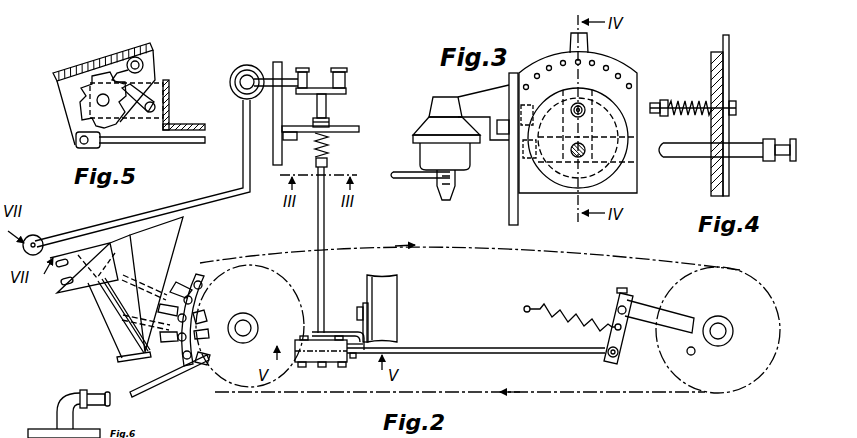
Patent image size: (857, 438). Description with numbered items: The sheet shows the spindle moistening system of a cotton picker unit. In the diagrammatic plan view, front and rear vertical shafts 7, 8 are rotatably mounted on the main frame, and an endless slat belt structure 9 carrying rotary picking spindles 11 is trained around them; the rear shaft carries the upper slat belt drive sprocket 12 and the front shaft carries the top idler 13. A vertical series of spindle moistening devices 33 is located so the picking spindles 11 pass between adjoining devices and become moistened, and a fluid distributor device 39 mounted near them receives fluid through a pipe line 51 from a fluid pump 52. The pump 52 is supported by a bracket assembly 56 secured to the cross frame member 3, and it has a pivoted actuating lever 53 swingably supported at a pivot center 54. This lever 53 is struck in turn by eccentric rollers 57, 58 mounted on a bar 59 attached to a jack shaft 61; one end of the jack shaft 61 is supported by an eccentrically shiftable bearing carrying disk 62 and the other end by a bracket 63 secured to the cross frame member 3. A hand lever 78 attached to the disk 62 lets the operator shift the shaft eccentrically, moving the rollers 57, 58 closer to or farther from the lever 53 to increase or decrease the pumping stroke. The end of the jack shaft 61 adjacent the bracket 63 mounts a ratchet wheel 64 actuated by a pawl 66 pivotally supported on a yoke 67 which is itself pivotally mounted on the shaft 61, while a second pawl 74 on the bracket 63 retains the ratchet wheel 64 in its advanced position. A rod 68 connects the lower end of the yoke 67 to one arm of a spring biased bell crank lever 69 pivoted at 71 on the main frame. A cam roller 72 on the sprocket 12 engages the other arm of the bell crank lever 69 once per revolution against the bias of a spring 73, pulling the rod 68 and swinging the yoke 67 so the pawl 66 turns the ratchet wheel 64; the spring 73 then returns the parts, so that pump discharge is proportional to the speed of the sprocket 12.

In FIG. 5, the cross frame member 3 is at (189, 124).
In FIG. 2, the cross frame member 3 is at (398, 307).
In FIG. 2, the front vertical shaft 7 is at (243, 318).
In FIG. 2, the rear vertical shaft 8 is at (719, 323).
In FIG. 2, the endless slat belt structure 9 is at (197, 283).
In FIG. 2, the rotary picking spindles 11 is at (163, 375).
In FIG. 2, the upper slat belt drive sprocket 12 is at (730, 393).
In FIG. 2, the top idler 13 is at (236, 389).
In FIG. 2, the spindle moistening devices 33 is at (98, 318).
In FIG. 2, the fluid distributor device 39 is at (40, 239).
In FIG. 3, the pipe line 51 is at (413, 179).
In FIG. 2, the pipe line 51 is at (196, 208).
In FIG. 6, the pipe line 51 is at (96, 391).
In FIG. 3, the fluid pump 52 is at (426, 126).
In FIG. 2, the fluid pump 52 is at (247, 64).
In FIG. 3, the pump actuating lever 53 is at (521, 146).
In FIG. 2, the pump actuating lever 53 is at (288, 78).
In FIG. 3, the pivot center 54 is at (528, 113).
In FIG. 3, the bracket assembly 56 is at (666, 69).
In FIG. 4, the bracket assembly 56 is at (712, 70).
In FIG. 2, the bracket assembly 56 is at (285, 141).
In FIG. 3, the eccentric roller 57 is at (530, 156).
In FIG. 4, the eccentric roller 57 is at (781, 139).
In FIG. 2, the eccentric roller 57 is at (306, 70).
In FIG. 4, the eccentric roller 58 is at (666, 112).
In FIG. 2, the eccentric roller 58 is at (346, 72).
In FIG. 4, the bar 59 is at (638, 166).
In FIG. 2, the bar 59 is at (348, 89).
In FIG. 5, the jack shaft 61 is at (99, 104).
In FIG. 3, the jack shaft 61 is at (572, 146).
In FIG. 4, the jack shaft 61 is at (687, 158).
In FIG. 2, the jack shaft 61 is at (326, 227).
In FIG. 3, the eccentrically shiftable bearing carrying disk 62 is at (566, 182).
In FIG. 4, the eccentrically shiftable bearing carrying disk 62 is at (728, 170).
In FIG. 5, the bracket 63 is at (157, 84).
In FIG. 2, the bracket 63 is at (336, 333).
In FIG. 5, the ratchet wheel 64 is at (80, 96).
In FIG. 5, the pawl 66 is at (129, 52).
In FIG. 5, the yoke 67 is at (150, 55).
In FIG. 2, the yoke 67 is at (296, 346).
In FIG. 5, the rod 68 is at (176, 146).
In FIG. 2, the rod 68 is at (450, 355).
In FIG. 2, the bell crank lever 69 is at (619, 348).
In FIG. 2, the pivot 71 is at (618, 308).
In FIG. 2, the cam roller 72 is at (695, 354).
In FIG. 2, the spring 73 is at (555, 306).
In FIG. 5, the pawl 74 is at (149, 113).
In FIG. 3, the hand lever 78 is at (571, 43).
In FIG. 4, the hand lever 78 is at (730, 47).
In FIG. 2, the hand lever 78 is at (330, 128).